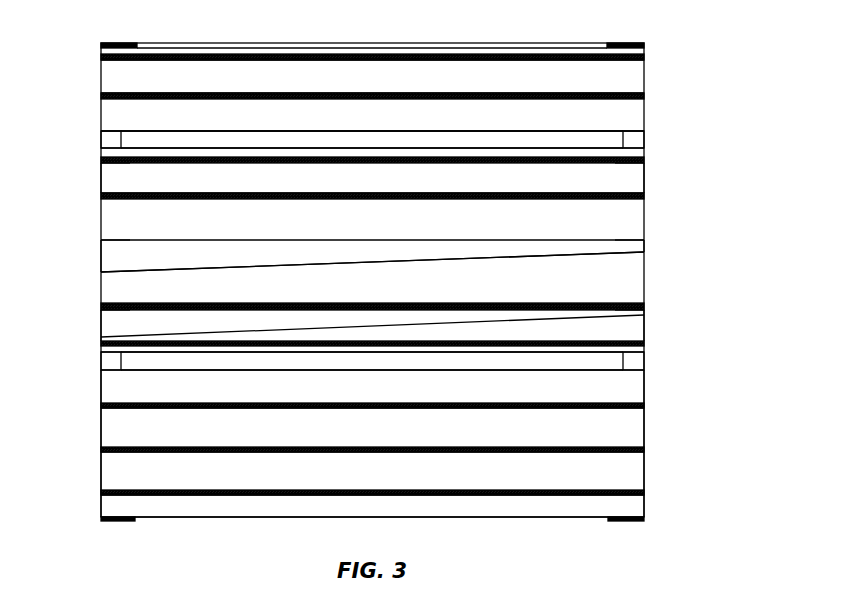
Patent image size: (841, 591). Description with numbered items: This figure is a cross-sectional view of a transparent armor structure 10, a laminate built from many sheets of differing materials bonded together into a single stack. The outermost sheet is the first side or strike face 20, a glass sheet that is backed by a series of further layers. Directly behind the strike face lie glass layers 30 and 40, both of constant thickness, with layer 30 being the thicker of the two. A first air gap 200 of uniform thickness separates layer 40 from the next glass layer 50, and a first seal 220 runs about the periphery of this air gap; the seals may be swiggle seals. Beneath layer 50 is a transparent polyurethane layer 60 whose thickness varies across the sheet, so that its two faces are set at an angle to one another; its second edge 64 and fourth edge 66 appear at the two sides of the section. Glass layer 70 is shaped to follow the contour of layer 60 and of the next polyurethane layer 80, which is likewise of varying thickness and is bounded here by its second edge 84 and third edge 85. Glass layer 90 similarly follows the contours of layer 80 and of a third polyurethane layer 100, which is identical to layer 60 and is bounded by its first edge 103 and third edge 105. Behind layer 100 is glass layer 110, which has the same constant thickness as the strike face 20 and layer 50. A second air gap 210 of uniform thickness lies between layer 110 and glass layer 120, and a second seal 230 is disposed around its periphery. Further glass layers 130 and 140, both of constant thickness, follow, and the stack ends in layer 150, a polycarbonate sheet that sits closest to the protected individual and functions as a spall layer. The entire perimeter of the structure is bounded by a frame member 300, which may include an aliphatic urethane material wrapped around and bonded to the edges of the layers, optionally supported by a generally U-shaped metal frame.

The transparent armor structure 10 is at (340, 43).
The strike face 20 is at (405, 50).
The layer 30 is at (386, 87).
The layer 40 is at (386, 125).
The layer 50 is at (298, 150).
The layer 60 is at (386, 188).
The second edge 64 is at (644, 177).
The fourth edge 66 is at (99, 178).
The layer 70 is at (386, 228).
The layer 80 is at (317, 253).
The second edge 84 is at (644, 248).
The third edge 85 is at (101, 255).
The layer 90 is at (386, 295).
The layer 100 is at (473, 330).
The first edge 103 is at (644, 332).
The third edge 105 is at (99, 337).
The layer 110 is at (99, 352).
The layer 120 is at (391, 397).
The layer 130 is at (391, 437).
The layer 140 is at (391, 482).
The layer 150 is at (422, 507).
The first air gap 200 is at (476, 140).
The second air gap 210 is at (427, 362).
The first seal 220 is at (113, 142).
The second seal 230 is at (113, 362).
The frame member 300 is at (101, 440).